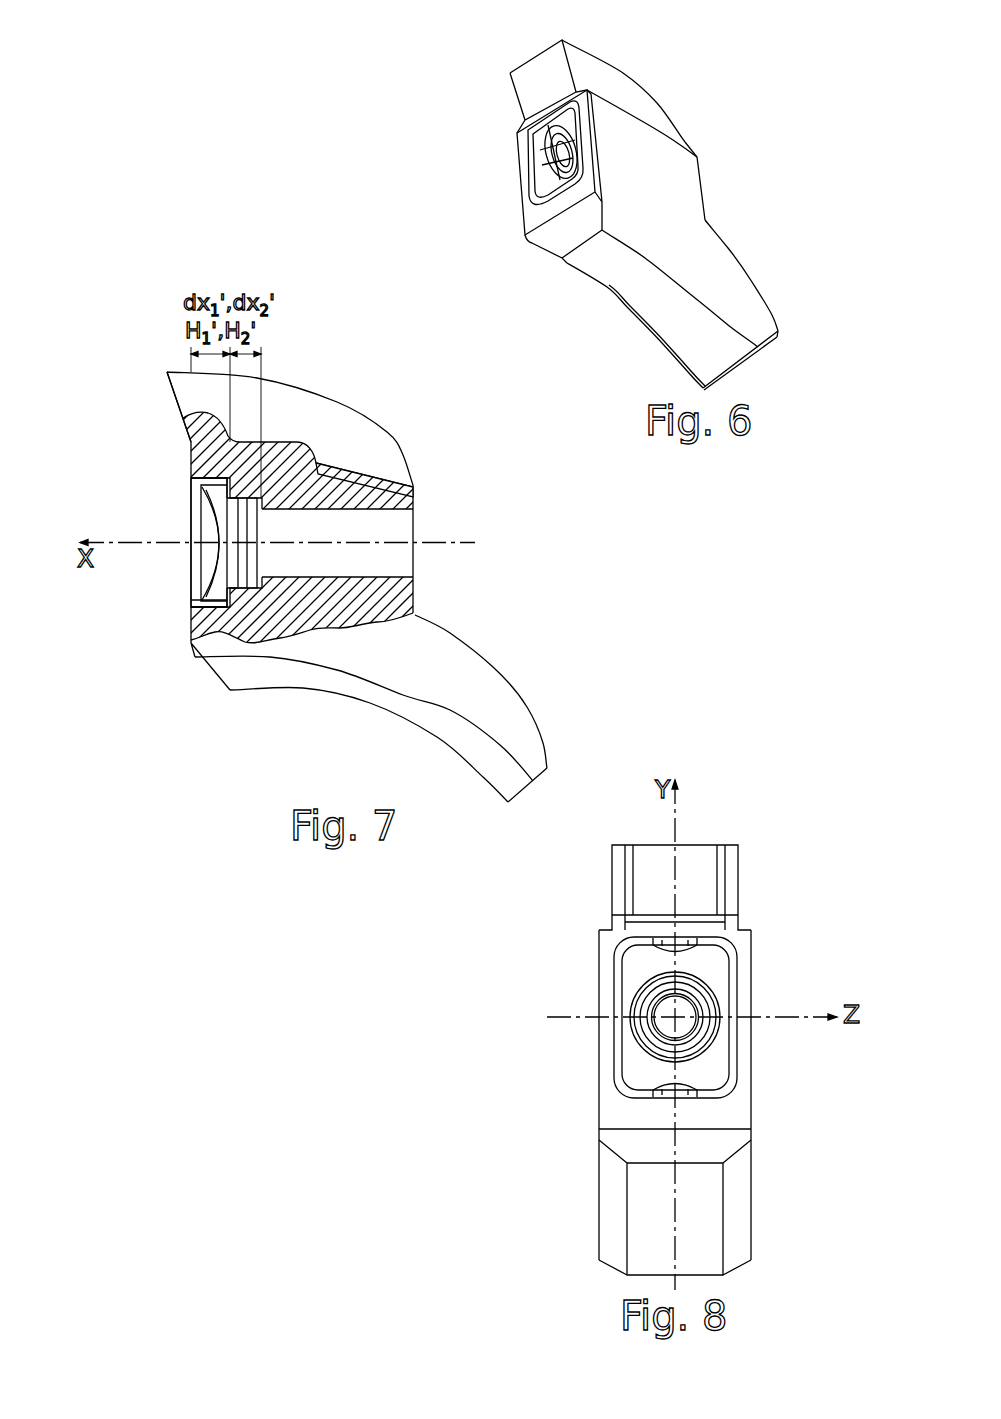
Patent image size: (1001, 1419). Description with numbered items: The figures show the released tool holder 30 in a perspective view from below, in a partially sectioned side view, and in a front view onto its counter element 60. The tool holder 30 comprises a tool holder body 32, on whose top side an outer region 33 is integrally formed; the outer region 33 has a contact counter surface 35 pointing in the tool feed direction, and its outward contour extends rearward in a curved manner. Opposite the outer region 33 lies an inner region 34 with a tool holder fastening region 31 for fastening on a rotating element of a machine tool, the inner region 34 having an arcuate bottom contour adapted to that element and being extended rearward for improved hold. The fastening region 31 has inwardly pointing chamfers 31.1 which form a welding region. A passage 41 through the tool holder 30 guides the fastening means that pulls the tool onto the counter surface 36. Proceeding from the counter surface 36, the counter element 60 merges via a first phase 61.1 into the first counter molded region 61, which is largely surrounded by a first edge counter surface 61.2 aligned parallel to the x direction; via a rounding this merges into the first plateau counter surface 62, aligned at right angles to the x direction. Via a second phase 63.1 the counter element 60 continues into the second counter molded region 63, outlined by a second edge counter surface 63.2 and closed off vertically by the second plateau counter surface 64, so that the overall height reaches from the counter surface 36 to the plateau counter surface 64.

In FIG. 6, the tool holder 30 is at (624, 321).
In FIG. 7, the tool holder 30 is at (387, 398).
In FIG. 8, the tool holder 30 is at (568, 1112).
In FIG. 6, the tool holder fastening region 31 is at (588, 260).
In FIG. 7, the chamfers 31.1 is at (293, 673).
In FIG. 6, the tool holder body 32 is at (687, 180).
In FIG. 6, the outer region 33 is at (592, 74).
In FIG. 7, the outer region 33 is at (287, 398).
In FIG. 8, the outer region 33 is at (695, 858).
In FIG. 6, the inner region 34 is at (752, 287).
In FIG. 7, the inner region 34 is at (498, 710).
In FIG. 8, the inner region 34 is at (640, 1207).
In FIG. 7, the contact counter surface 35 is at (172, 405).
In FIG. 7, the counter surface 36 is at (191, 644).
In FIG. 7, the passage 41 is at (403, 522).
In FIG. 8, the passage 41 is at (660, 1000).
In FIG. 6, the counter element 60 is at (497, 153).
In FIG. 7, the counter element 60 is at (141, 543).
In FIG. 8, the counter element 60 is at (685, 989).
In FIG. 7, the first counter molded region 61 is at (202, 483).
In FIG. 7, the first phase 61.1 is at (191, 618).
In FIG. 7, the first edge counter surface 61.2 is at (192, 478).
In FIG. 8, the first edge counter surface 61.2 is at (722, 955).
In FIG. 7, the first plateau counter surface 62 is at (220, 506).
In FIG. 8, the first plateau counter surface 62 is at (705, 950).
In FIG. 7, the second counter molded region 63 is at (232, 500).
In FIG. 7, the second phase 63.1 is at (238, 500).
In FIG. 7, the second edge counter surface 63.2 is at (200, 605).
In FIG. 8, the second edge counter surface 63.2 is at (713, 1000).
In FIG. 7, the second plateau counter surface 64 is at (247, 587).
In FIG. 8, the second plateau counter surface 64 is at (717, 1023).